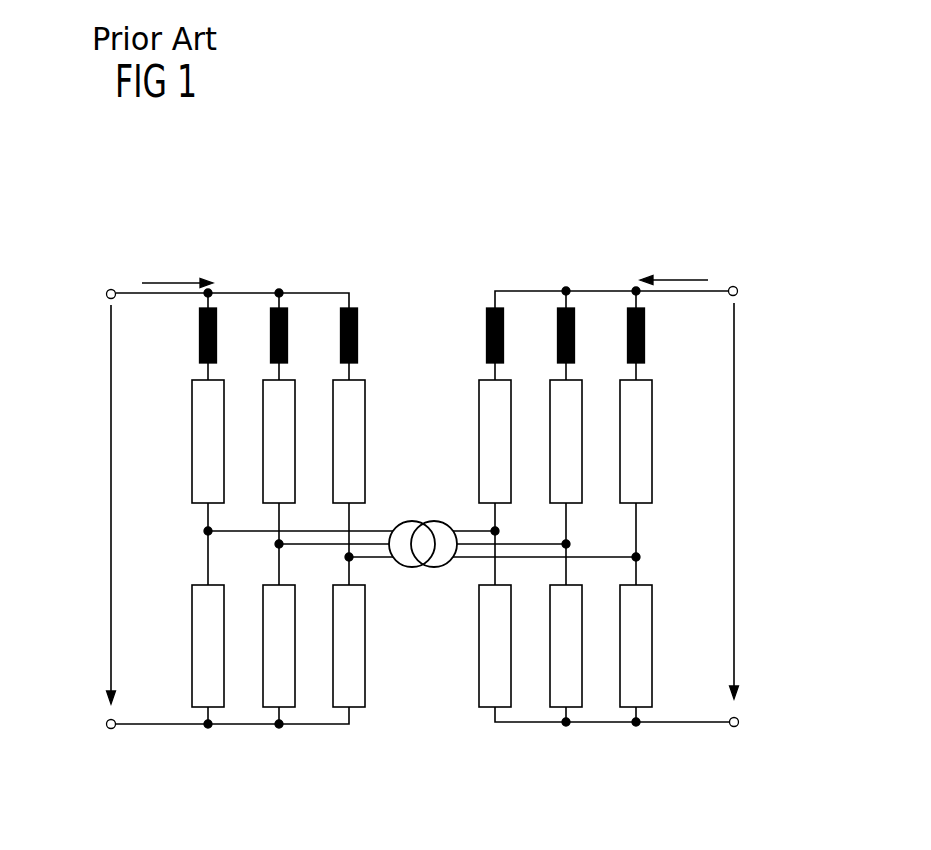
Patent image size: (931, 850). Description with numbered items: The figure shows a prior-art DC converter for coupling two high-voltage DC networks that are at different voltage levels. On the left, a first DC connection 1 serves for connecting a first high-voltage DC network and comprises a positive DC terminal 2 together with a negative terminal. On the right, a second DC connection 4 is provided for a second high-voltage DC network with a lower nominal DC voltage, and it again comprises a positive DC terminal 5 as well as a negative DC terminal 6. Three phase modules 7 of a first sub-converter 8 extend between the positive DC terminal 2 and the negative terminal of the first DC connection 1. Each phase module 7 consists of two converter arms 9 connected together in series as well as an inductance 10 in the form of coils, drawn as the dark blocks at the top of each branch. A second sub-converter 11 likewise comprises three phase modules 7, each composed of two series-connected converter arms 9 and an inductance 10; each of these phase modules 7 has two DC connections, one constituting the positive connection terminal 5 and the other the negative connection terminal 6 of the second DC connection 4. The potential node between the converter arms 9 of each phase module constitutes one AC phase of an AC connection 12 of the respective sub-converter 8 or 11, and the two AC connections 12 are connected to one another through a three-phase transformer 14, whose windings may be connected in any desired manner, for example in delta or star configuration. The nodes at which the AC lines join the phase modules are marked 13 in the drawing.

The first DC connection 1 is at (86, 580).
The positive DC terminal 2 is at (158, 296).
The second DC connection 4 is at (771, 421).
The positive DC terminal 5 is at (688, 294).
The negative DC terminal 6 is at (690, 724).
The phase module 7 is at (188, 699).
The first sub-converter 8 is at (323, 281).
The converter arm 9 is at (192, 420).
The inductance 10 is at (358, 322).
The second sub-converter 11 is at (497, 279).
The AC connection 12 is at (248, 528).
The AC connection node 13 is at (199, 547).
The three-phase transformer 14 is at (406, 578).